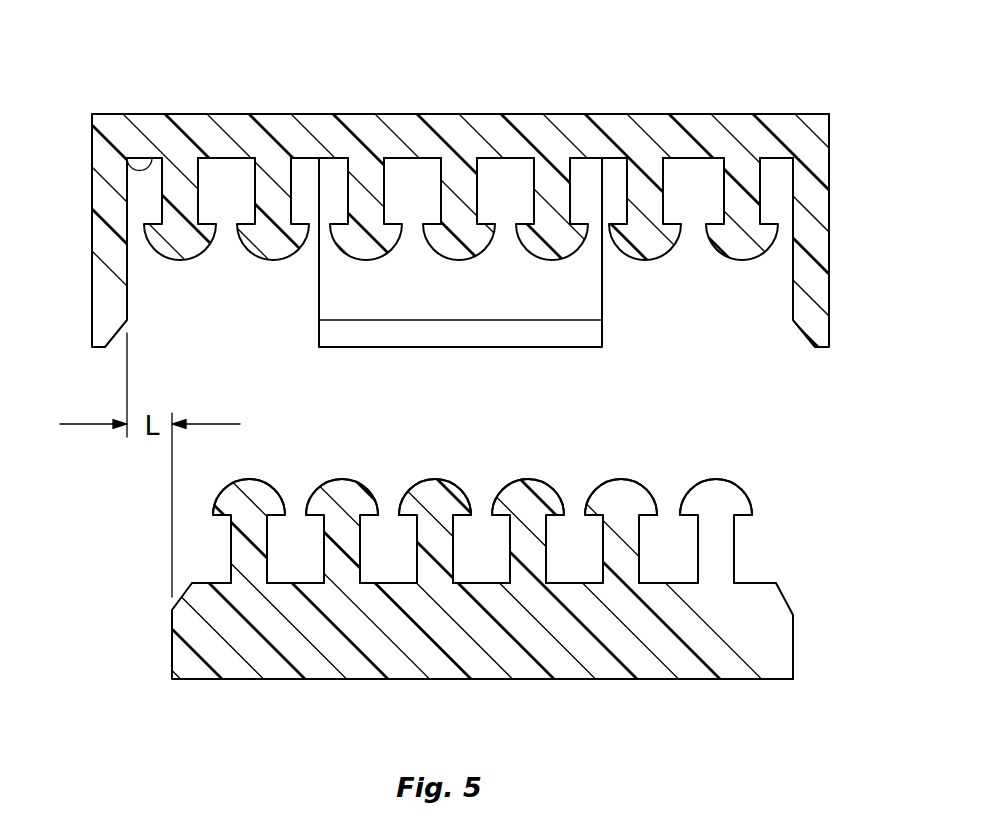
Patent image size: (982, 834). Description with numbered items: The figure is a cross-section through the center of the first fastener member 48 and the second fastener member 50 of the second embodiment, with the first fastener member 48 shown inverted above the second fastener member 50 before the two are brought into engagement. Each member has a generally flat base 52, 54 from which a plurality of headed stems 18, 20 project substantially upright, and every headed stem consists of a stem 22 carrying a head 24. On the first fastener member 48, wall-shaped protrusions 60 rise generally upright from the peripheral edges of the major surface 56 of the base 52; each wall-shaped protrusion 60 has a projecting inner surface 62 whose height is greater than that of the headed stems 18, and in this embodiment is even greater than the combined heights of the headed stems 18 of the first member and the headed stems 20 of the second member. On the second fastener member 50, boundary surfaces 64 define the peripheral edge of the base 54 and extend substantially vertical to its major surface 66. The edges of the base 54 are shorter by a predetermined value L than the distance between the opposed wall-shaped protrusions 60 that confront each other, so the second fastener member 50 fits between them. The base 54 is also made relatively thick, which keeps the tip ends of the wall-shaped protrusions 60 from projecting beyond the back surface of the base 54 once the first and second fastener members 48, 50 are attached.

The headed stems 18 is at (433, 274).
The headed stems 20 is at (593, 472).
The stem 22 is at (440, 182).
The head 24 is at (402, 496).
The first fastener member 48 is at (728, 100).
The second fastener member 50 is at (803, 630).
The base 52 is at (607, 123).
The base 54 is at (265, 660).
The major surface 56 is at (132, 158).
The wall-shaped protrusions 60 is at (92, 238).
The projecting inner surface 62 is at (127, 290).
The boundary surface 64 is at (796, 652).
The major surface 66 is at (762, 582).